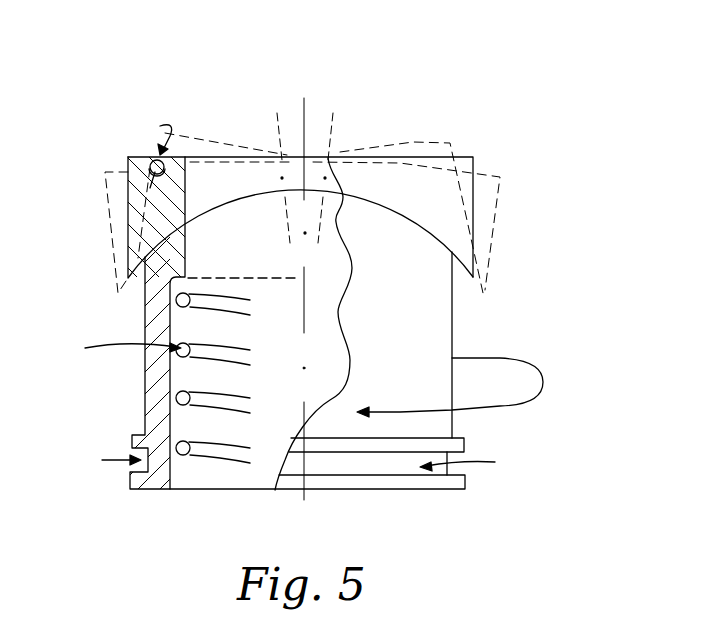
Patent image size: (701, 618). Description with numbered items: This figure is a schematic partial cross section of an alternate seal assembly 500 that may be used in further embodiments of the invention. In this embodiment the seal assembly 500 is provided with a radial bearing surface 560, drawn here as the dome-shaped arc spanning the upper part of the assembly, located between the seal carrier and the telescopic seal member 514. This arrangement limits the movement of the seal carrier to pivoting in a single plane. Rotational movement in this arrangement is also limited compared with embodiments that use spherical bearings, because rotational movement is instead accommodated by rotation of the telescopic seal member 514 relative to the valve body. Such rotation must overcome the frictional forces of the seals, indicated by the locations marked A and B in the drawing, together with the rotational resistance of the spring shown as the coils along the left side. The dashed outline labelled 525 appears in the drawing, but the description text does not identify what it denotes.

The seal assembly 500 is at (500, 92).
The radial bearing surface 560 is at (393, 210).
The nozzle in alternate position 525 is at (443, 212).
The telescopic seal member 514 is at (420, 327).